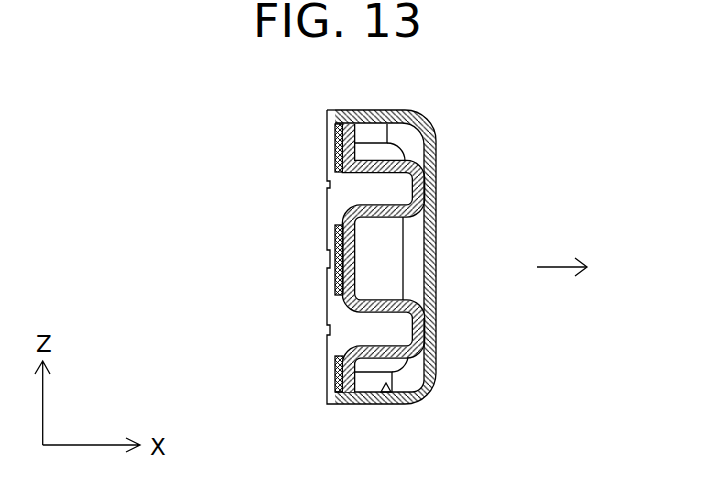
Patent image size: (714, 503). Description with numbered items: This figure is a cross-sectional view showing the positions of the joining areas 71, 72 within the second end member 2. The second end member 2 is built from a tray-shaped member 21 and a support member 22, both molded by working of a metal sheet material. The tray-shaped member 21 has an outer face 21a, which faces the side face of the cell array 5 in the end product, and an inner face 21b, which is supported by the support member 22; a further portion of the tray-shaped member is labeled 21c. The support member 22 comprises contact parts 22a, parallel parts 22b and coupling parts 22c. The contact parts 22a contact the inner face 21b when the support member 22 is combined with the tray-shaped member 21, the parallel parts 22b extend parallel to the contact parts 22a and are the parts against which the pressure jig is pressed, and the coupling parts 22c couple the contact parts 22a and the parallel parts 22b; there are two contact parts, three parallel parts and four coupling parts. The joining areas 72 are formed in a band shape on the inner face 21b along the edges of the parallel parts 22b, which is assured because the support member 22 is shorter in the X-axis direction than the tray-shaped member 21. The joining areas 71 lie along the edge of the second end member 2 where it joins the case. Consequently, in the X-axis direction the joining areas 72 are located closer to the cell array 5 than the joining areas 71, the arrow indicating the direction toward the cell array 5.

The second end member 2 is at (379, 255).
The tray-shaped member 21 is at (435, 291).
The outer face 21a is at (438, 338).
The inner face 21b is at (386, 392).
The flange of housing 21c is at (327, 341).
The support member 22 is at (385, 221).
The contact parts 22a is at (436, 181).
The parallel parts 22b is at (347, 226).
The coupling parts 22c is at (367, 142).
The joining areas 71 is at (336, 391).
The joining areas 72 is at (339, 258).
The cell array 5 is at (575, 267).